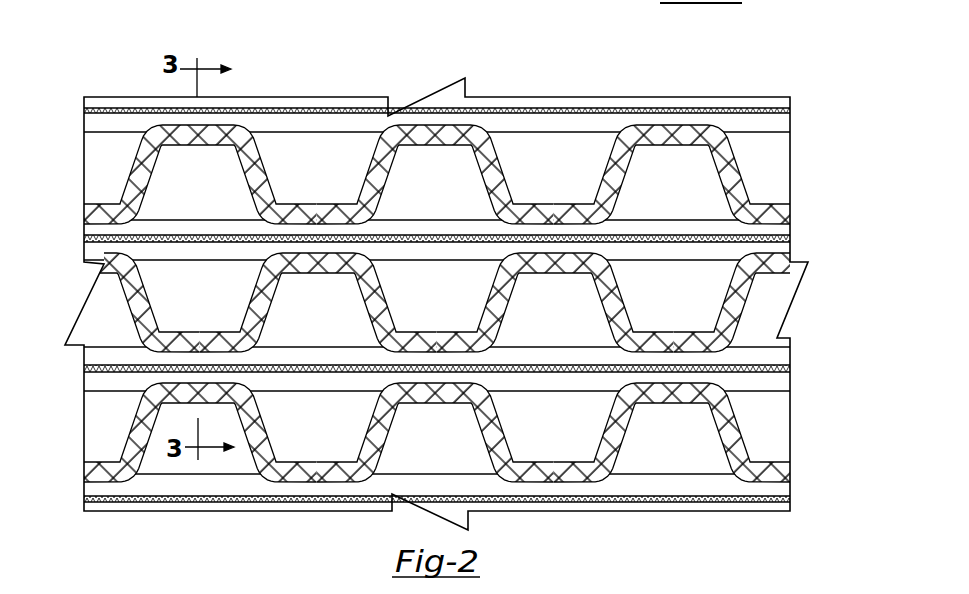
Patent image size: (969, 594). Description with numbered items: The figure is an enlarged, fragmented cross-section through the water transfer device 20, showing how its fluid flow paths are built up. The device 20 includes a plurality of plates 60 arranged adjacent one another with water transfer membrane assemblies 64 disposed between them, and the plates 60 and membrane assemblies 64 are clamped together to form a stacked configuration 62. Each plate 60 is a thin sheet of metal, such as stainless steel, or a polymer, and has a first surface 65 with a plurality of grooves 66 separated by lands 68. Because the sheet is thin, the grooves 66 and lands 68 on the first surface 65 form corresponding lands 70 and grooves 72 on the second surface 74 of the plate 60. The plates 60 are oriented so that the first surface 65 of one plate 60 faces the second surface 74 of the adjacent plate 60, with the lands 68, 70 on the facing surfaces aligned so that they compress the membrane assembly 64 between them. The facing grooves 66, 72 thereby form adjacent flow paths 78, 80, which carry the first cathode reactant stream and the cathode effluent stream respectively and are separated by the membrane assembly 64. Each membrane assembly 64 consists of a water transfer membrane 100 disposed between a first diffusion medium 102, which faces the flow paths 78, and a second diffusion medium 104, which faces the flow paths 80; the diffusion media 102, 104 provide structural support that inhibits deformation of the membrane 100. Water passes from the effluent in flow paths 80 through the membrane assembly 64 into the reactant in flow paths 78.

The water transfer device 20 is at (142, 64).
The plate 60 is at (84, 220).
The stacked configuration 62 is at (108, 90).
The water transfer membrane assembly 64 is at (794, 121).
The first surface 65 is at (227, 125).
The groove 66 is at (343, 143).
The land 68 is at (178, 135).
The land 70 is at (337, 210).
The groove 72 is at (170, 160).
The second surface 74 is at (217, 147).
The flow path 78 is at (320, 185).
The flow path 80 is at (202, 192).
The water transfer membrane 100 is at (790, 367).
The first diffusion medium 102 is at (790, 382).
The second diffusion medium 104 is at (790, 347).